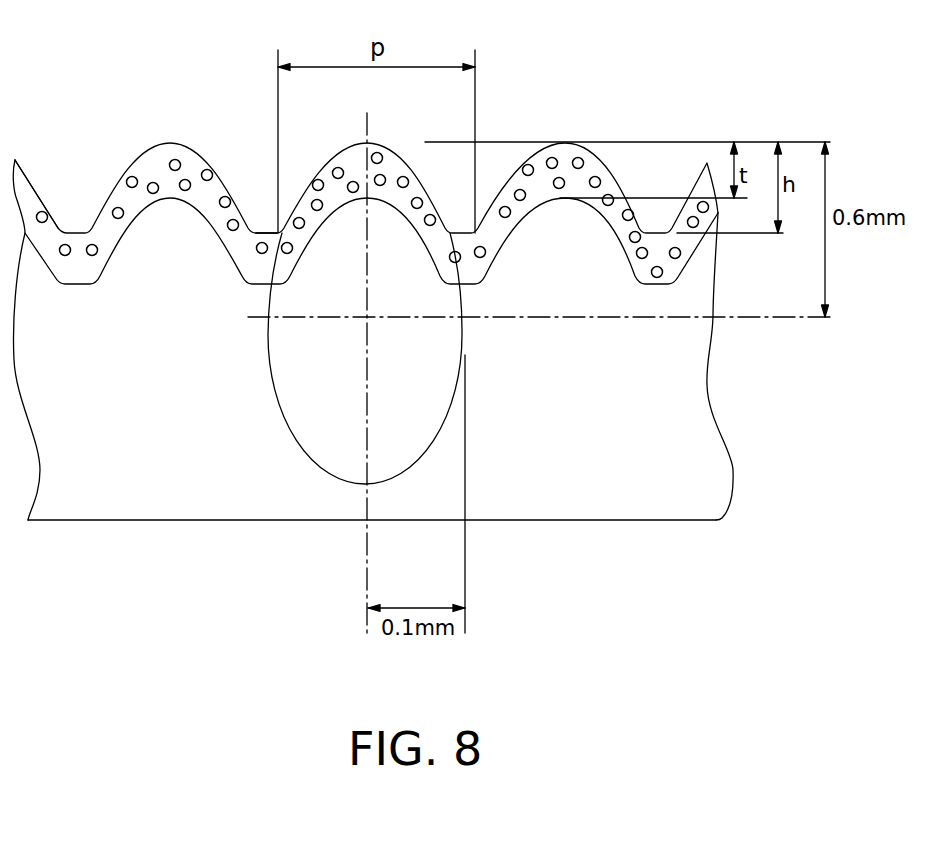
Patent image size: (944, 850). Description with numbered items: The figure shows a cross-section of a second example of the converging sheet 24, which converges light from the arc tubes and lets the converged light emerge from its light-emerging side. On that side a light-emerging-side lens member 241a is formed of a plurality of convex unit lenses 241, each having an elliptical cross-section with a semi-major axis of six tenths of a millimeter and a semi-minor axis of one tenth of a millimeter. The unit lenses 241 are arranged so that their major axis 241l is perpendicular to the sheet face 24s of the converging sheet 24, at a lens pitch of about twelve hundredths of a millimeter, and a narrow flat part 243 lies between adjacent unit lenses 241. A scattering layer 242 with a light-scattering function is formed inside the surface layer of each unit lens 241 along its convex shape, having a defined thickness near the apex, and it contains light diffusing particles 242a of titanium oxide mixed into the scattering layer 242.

The converging sheet 24 is at (600, 493).
The sheet face 24s is at (245, 520).
The unit lens 241 is at (168, 245).
The light-emerging-side lens member 241a is at (92, 157).
The major axis 241l is at (367, 402).
The scattering layer 242 is at (157, 173).
The light diffusing particles 242a is at (581, 158).
The flat part 243 is at (267, 231).